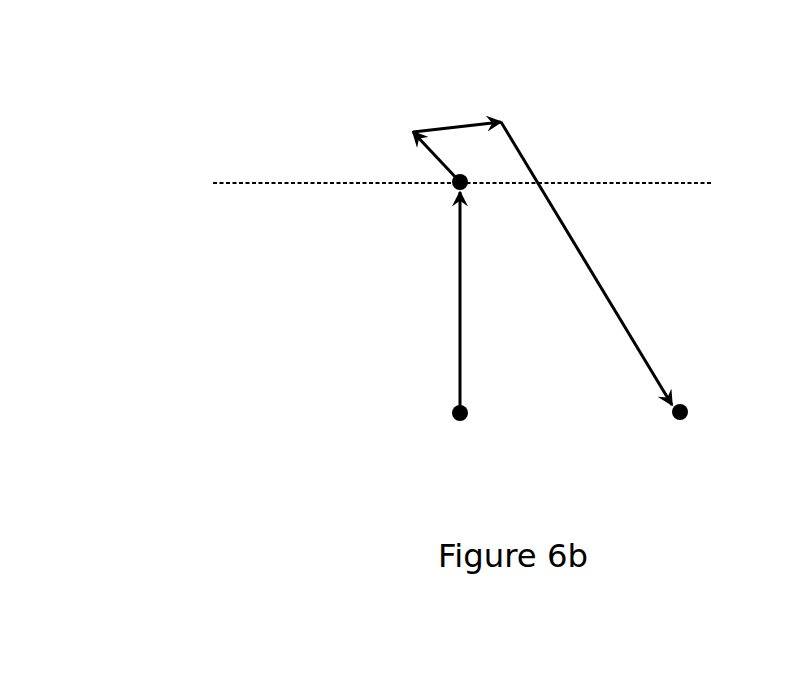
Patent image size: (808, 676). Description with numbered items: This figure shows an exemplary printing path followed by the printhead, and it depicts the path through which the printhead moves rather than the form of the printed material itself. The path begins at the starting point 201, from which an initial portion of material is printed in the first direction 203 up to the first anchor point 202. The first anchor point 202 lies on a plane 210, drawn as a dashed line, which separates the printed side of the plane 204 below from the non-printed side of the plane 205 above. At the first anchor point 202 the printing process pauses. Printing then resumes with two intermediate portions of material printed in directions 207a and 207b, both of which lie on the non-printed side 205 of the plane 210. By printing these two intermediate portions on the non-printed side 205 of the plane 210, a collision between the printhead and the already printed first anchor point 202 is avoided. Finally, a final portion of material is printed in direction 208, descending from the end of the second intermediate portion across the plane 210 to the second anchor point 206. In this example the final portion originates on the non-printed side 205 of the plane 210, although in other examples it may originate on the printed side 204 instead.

The starting point 201 is at (451, 416).
The first anchor point 202 is at (453, 189).
The first direction 203 is at (458, 360).
The printed side of the plane 204 is at (268, 238).
The non-printed side of the plane 205 is at (702, 162).
The second anchor point 206 is at (688, 408).
The direction of first intermediate portion 207a is at (440, 163).
The direction of second intermediate portion 207b is at (453, 122).
The direction of final portion 208 is at (606, 292).
The plane 210 is at (494, 187).